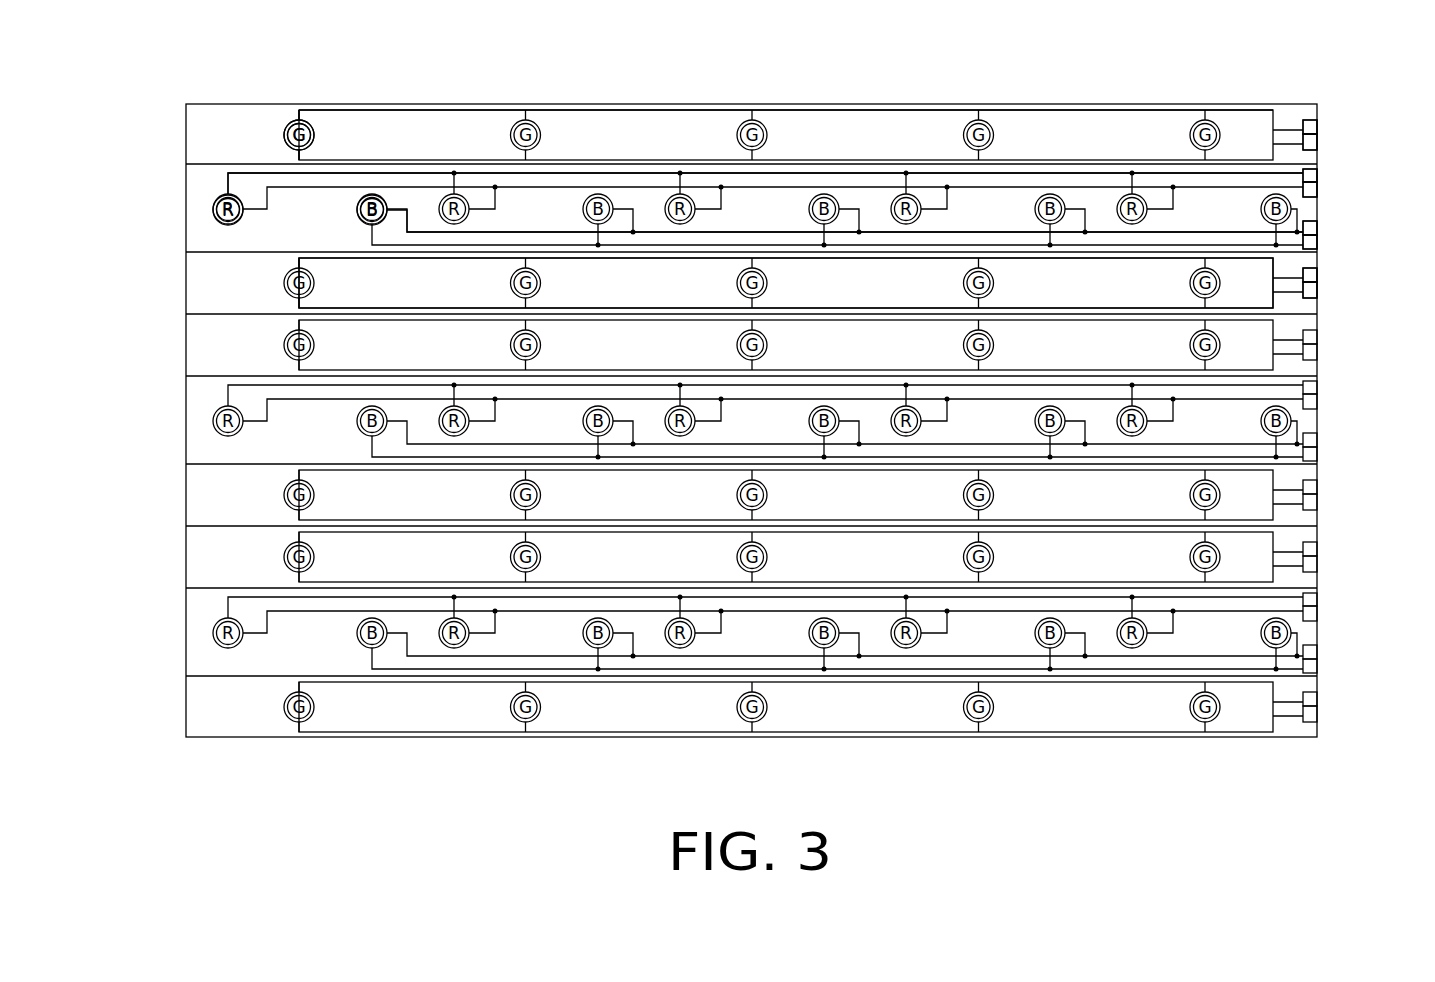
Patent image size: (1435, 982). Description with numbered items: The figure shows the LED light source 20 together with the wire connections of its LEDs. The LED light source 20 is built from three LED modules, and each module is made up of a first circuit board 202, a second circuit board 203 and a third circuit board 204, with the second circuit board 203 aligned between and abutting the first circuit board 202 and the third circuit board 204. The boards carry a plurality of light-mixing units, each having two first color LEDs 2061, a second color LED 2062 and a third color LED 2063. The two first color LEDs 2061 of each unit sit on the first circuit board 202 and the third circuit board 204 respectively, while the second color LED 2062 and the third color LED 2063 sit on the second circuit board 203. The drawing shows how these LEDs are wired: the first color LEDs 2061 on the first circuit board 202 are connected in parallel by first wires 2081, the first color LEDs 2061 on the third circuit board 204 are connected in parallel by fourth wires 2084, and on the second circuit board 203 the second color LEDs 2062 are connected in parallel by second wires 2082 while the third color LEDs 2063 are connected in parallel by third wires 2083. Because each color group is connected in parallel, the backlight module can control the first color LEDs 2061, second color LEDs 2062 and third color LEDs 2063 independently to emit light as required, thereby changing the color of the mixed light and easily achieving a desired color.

The LED light source 20 is at (776, 61).
The first circuit board 202 is at (1307, 160).
The second circuit board 203 is at (1308, 209).
The third circuit board 204 is at (1305, 307).
The first color LED 2061 is at (284, 133).
The second color LED 2062 is at (213, 211).
The third color LED 2063 is at (357, 213).
The first wires 2081 is at (332, 110).
The second wires 2082 is at (228, 185).
The third wires 2083 is at (398, 205).
The fourth wires 2084 is at (299, 305).